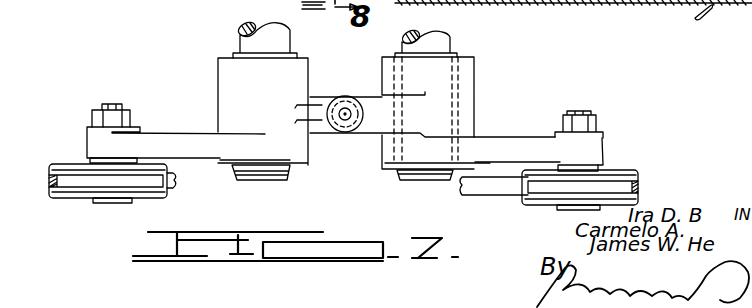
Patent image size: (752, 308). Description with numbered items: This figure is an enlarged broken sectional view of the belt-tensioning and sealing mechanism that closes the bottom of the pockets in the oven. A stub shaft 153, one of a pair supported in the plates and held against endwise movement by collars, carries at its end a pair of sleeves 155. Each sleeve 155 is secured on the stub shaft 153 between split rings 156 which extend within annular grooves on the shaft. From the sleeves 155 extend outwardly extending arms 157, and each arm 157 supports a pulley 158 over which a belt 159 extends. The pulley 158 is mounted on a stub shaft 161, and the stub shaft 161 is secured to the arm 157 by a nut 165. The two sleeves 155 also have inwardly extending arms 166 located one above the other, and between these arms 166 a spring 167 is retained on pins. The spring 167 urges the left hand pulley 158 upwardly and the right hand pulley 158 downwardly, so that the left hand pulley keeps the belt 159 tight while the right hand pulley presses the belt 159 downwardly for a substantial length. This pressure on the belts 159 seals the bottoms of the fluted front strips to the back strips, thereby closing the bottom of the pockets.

The stub shaft 153 is at (242, 33).
The sleeve 155 is at (227, 83).
The split ring 156 is at (234, 51).
The outwardly extending arm 157 is at (173, 138).
The pulley 158 is at (80, 201).
The belt 159 is at (645, 183).
The stub shaft 161 is at (115, 207).
The nut 165 is at (100, 109).
The inwardly extending arm 166 is at (372, 95).
The spring 167 is at (336, 137).